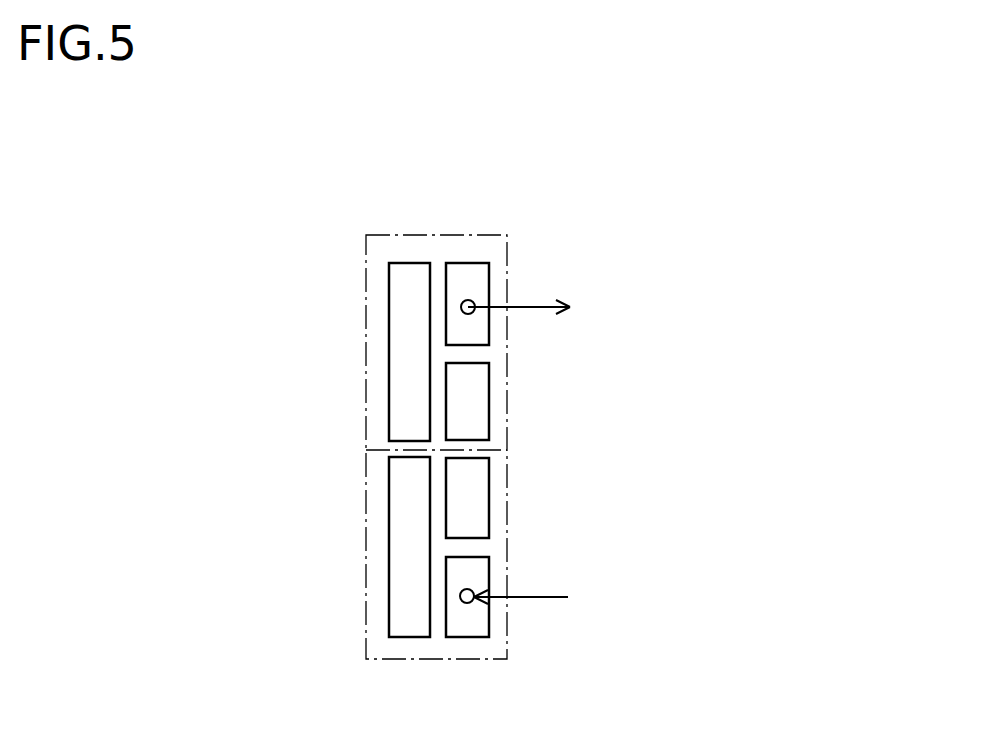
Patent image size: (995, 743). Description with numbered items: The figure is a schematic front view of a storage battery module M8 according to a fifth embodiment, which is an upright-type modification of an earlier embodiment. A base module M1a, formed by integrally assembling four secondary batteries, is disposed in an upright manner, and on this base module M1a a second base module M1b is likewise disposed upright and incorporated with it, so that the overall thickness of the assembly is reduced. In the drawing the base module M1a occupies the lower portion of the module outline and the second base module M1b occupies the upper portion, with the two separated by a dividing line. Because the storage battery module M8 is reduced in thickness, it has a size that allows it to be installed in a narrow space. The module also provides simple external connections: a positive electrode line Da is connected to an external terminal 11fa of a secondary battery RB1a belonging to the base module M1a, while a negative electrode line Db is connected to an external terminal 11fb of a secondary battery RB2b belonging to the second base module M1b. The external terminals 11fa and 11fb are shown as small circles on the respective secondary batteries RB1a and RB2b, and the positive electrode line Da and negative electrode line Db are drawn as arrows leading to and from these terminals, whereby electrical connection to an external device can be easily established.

The storage battery module M8 is at (572, 267).
The second base module M1b is at (396, 356).
The base module M1a is at (387, 547).
The secondary battery RB2b is at (466, 287).
The secondary battery RB1a is at (472, 573).
The external terminal 11fb is at (475, 312).
The external terminal 11fa is at (472, 602).
The negative electrode line Db is at (533, 310).
The positive electrode line Da is at (533, 598).